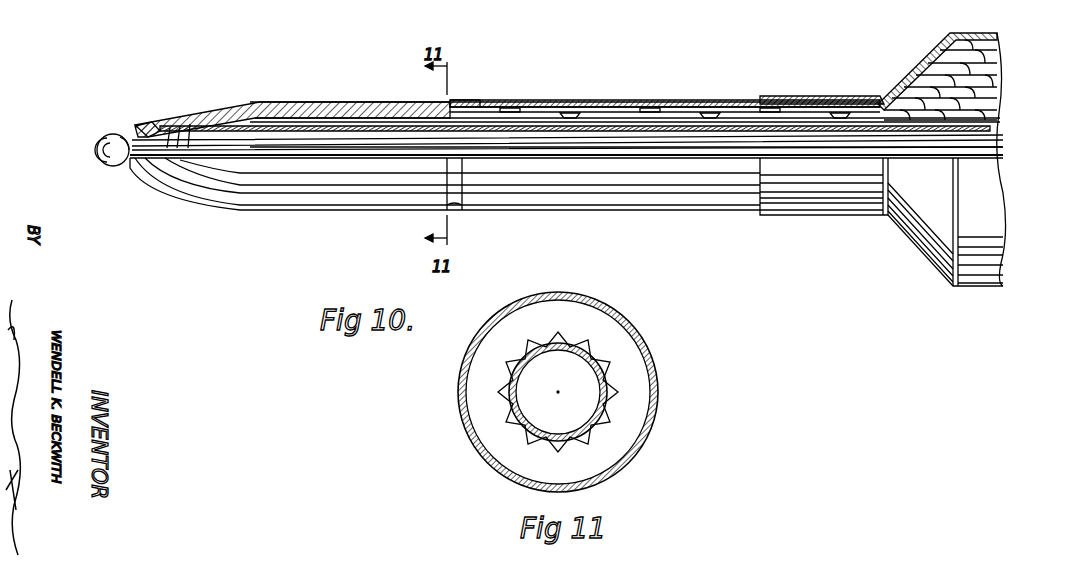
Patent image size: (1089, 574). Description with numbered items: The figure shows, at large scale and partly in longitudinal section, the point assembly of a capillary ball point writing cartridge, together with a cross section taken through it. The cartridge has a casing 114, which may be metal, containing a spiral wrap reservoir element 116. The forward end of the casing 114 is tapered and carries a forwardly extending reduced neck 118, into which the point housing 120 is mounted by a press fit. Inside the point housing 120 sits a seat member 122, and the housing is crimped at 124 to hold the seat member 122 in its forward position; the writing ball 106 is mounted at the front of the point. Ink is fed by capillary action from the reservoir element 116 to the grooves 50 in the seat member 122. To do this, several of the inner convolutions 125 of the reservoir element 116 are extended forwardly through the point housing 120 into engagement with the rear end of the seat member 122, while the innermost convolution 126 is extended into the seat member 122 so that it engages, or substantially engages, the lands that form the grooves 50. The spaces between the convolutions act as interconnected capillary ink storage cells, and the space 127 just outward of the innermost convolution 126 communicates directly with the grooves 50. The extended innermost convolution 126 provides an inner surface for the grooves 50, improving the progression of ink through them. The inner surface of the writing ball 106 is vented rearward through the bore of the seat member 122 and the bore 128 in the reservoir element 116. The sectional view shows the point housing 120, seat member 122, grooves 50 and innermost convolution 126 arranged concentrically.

In FIG. 10, the grooves 50 is at (189, 146).
In FIG. 11, the grooves 50 is at (530, 445).
In FIG. 10, the writing ball 106 is at (98, 148).
In FIG. 10, the casing 114 is at (960, 35).
In FIG. 10, the reservoir element 116 is at (1008, 86).
In FIG. 10, the reduced neck 118 is at (800, 102).
In FIG. 10, the point housing 120 is at (687, 105).
In FIG. 11, the point housing 120 is at (594, 310).
In FIG. 10, the seat member 122 is at (248, 112).
In FIG. 11, the seat member 122 is at (622, 350).
In FIG. 10, the crimp 124 is at (451, 104).
In FIG. 10, the inner convolutions 125 is at (603, 125).
In FIG. 10, the innermost convolution 126 is at (310, 131).
In FIG. 11, the innermost convolution 126 is at (520, 375).
In FIG. 10, the space 127 is at (540, 122).
In FIG. 10, the bore 128 is at (601, 147).